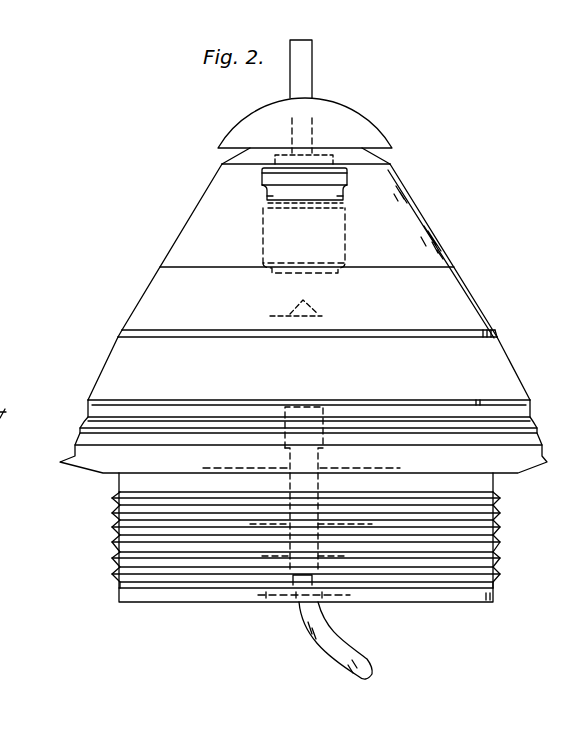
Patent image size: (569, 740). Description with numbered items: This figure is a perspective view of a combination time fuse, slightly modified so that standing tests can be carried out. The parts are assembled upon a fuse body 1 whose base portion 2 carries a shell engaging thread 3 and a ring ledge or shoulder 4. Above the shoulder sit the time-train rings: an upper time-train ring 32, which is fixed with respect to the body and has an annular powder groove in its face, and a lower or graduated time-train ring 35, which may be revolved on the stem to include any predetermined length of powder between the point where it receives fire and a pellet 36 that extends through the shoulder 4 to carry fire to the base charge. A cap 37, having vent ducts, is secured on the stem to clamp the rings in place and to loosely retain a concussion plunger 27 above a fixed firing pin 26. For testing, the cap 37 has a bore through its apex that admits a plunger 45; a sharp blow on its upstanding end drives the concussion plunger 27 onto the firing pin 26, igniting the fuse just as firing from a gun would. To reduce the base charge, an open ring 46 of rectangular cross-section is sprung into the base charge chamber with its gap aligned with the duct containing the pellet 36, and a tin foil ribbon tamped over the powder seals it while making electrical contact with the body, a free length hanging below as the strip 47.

The fuse body 1 is at (173, 595).
The base portion 2 is at (124, 587).
The shell engaging thread 3 is at (113, 510).
The ring ledge or shoulder 4 is at (79, 430).
The firing pin 26 is at (325, 308).
The concussion plunger 27 is at (333, 238).
The upper time-train ring 32 is at (139, 300).
The lower or graduated time-train ring 35 is at (108, 355).
The pellet 36 is at (325, 443).
The cap 37 is at (240, 123).
The plunger 45 is at (297, 81).
The open ring 46 is at (258, 478).
The foil strip 47 is at (355, 657).